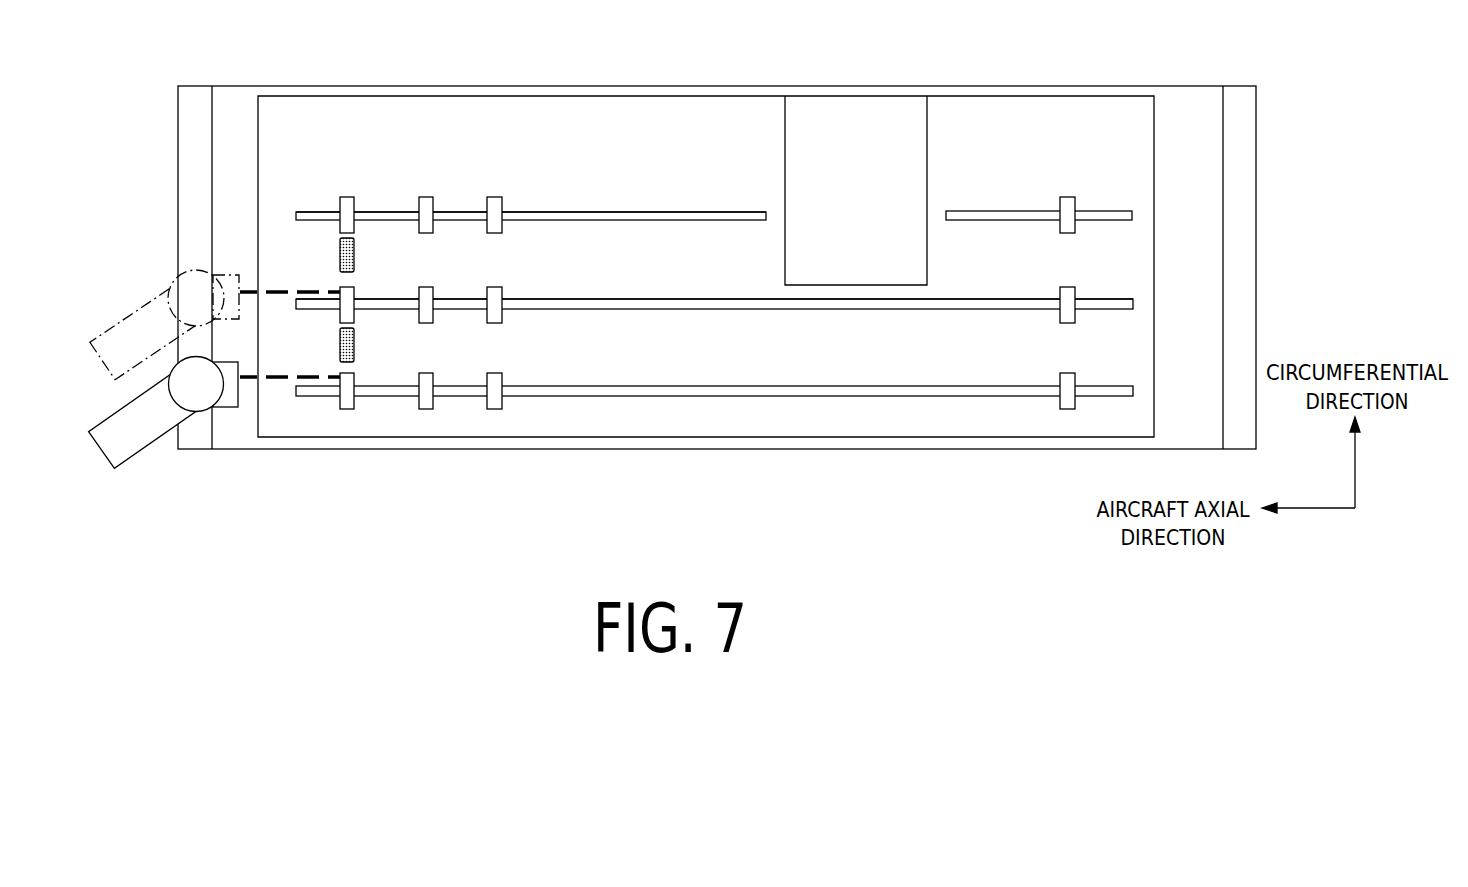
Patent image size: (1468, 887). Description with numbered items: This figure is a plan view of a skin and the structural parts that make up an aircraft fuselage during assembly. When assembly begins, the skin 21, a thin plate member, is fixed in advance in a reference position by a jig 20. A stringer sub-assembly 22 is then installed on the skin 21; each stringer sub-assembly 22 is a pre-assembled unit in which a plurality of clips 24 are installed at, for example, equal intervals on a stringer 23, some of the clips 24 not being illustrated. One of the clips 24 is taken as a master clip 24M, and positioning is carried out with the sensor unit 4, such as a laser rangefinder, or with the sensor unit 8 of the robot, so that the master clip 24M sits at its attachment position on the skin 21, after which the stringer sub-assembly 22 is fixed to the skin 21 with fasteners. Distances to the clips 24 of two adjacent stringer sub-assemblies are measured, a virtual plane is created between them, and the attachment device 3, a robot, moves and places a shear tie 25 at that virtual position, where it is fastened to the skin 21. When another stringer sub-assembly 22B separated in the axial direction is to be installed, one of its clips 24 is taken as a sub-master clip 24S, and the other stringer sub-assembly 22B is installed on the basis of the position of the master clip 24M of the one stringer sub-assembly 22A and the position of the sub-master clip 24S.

The attachment device 3 is at (155, 447).
The sensor unit 4 is at (224, 434).
The sensor unit 8 is at (230, 408).
The jig 20 is at (236, 106).
The skin 21 is at (296, 118).
The stringer sub-assembly 22 is at (688, 323).
The one stringer sub-assembly 22A is at (680, 197).
The other stringer sub-assembly 22B is at (982, 196).
The stringer 23 is at (575, 210).
The clip 24 is at (426, 197).
The master clip 24M is at (349, 470).
The sub-master clip 24S is at (1075, 207).
The shear tie 25 is at (340, 254).